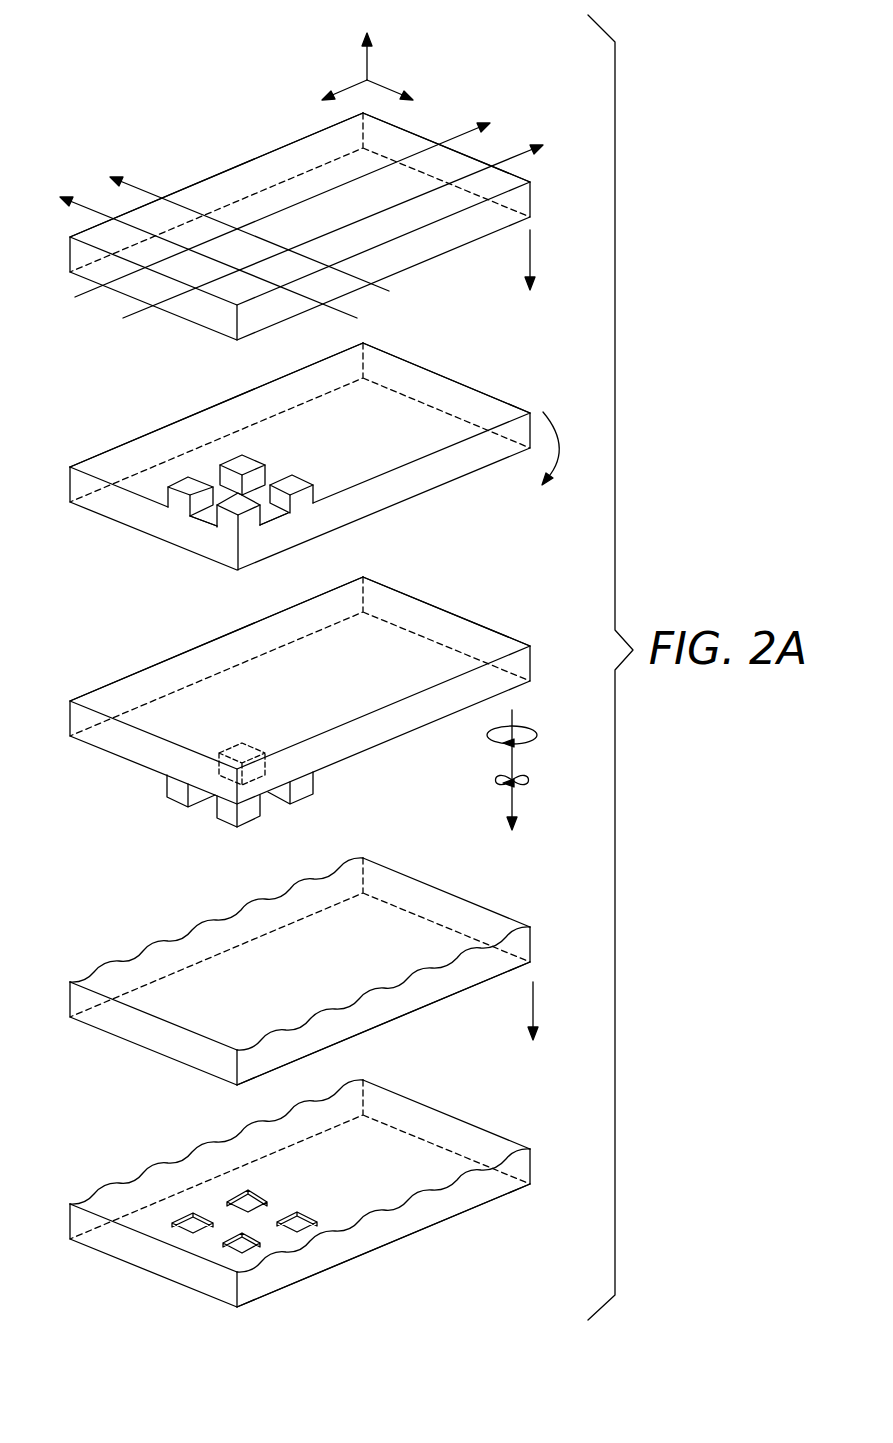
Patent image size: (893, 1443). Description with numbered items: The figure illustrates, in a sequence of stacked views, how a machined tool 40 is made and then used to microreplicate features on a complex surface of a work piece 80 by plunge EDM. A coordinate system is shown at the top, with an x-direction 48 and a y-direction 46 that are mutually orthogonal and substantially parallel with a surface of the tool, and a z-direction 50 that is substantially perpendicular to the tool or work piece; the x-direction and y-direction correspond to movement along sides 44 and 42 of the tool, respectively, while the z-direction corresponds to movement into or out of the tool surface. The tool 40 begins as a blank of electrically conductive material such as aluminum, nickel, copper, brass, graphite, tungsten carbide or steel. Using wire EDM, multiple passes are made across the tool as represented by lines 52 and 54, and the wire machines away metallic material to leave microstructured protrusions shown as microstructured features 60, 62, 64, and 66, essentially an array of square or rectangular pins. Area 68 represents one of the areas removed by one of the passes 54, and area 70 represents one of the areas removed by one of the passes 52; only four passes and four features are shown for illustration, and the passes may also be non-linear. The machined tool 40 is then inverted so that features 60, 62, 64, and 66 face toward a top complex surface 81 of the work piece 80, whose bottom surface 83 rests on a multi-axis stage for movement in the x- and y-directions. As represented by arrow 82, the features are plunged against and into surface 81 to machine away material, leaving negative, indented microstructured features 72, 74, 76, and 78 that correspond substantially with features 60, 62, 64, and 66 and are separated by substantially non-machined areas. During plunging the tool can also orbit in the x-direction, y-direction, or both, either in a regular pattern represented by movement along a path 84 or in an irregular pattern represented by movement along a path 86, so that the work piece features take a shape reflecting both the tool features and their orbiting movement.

The machined tool 40 is at (199, 313).
The side of tool 42 is at (288, 145).
The side of tool 44 is at (514, 175).
The y-direction 46 is at (354, 81).
The x-direction 48 is at (385, 85).
The z-direction 50 is at (372, 61).
The wire EDM passes 52 is at (357, 318).
The wire EDM passes 54 is at (128, 318).
The microstructured feature 60 is at (187, 482).
The microstructured feature 62 is at (247, 458).
The microstructured feature 64 is at (228, 520).
The microstructured feature 66 is at (298, 482).
The machined-away area 68 is at (198, 517).
The machined-away area 70 is at (268, 515).
The microstructured indented feature 72 is at (192, 1220).
The microstructured indented feature 74 is at (248, 1202).
The microstructured indented feature 76 is at (230, 1237).
The microstructured indented feature 78 is at (297, 1222).
The work piece 80 is at (120, 1022).
The top complex surface 81 is at (110, 975).
The arrow 82 is at (513, 713).
The bottom surface 83 is at (393, 1022).
The path 84 is at (533, 742).
The path 86 is at (542, 780).